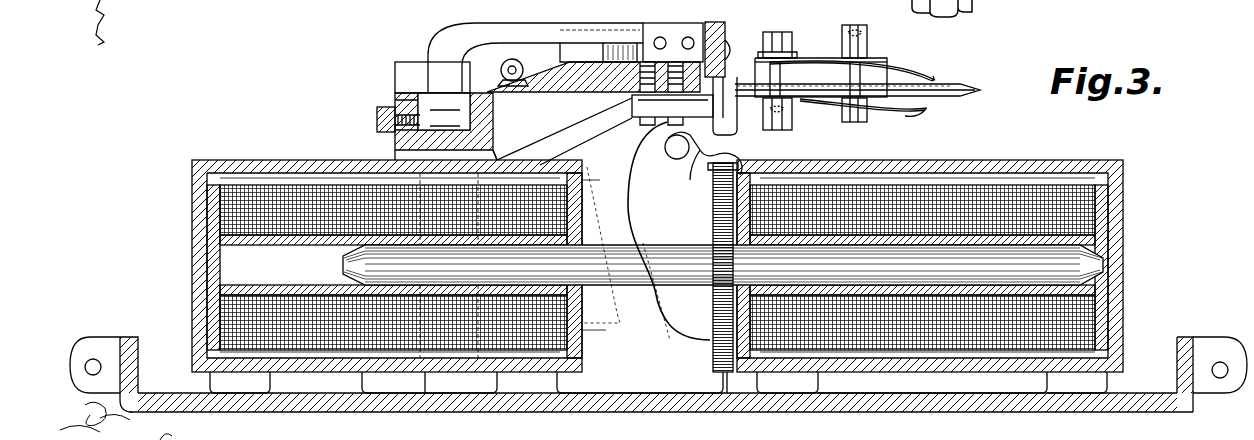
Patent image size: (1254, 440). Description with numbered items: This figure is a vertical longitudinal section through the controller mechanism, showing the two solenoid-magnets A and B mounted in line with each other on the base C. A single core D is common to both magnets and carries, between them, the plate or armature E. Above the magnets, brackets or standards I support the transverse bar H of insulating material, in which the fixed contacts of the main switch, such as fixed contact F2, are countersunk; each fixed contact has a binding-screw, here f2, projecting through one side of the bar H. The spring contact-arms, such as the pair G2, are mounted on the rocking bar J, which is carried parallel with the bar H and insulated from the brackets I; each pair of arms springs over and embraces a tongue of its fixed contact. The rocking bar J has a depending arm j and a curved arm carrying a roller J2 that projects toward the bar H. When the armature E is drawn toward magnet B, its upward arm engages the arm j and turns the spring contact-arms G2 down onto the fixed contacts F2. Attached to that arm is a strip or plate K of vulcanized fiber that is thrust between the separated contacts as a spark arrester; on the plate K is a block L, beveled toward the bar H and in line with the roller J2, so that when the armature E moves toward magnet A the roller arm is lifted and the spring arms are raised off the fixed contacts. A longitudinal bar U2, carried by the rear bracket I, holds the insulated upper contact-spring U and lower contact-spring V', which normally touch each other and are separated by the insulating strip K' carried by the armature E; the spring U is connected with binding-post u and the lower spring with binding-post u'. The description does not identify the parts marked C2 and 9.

The solenoid-magnet A is at (190, 266).
The solenoid-magnet B is at (1124, 262).
The base C is at (641, 412).
The core D is at (668, 244).
The armature E is at (713, 184).
The brackets or standards I is at (646, 231).
The intercepting strip or plate K is at (562, 125).
The insulating-strip K' is at (864, 73).
The block L is at (590, 62).
The insulating bar H is at (395, 100).
The fixed contact F2 is at (493, 114).
The binding-screw f2 is at (377, 122).
The spring contact-arm G2 is at (450, 40).
The rocking bar J is at (722, 24).
The roller J2 is at (501, 74).
The depending arm j is at (740, 132).
The block C2 is at (672, 110).
The longitudinal bar U2 is at (800, 70).
The upper contact-spring U is at (905, 72).
The lower contact-spring V' is at (863, 116).
The binding-post u is at (813, 29).
The binding-post u' is at (815, 114).
The connecting rod 9 is at (578, 23).